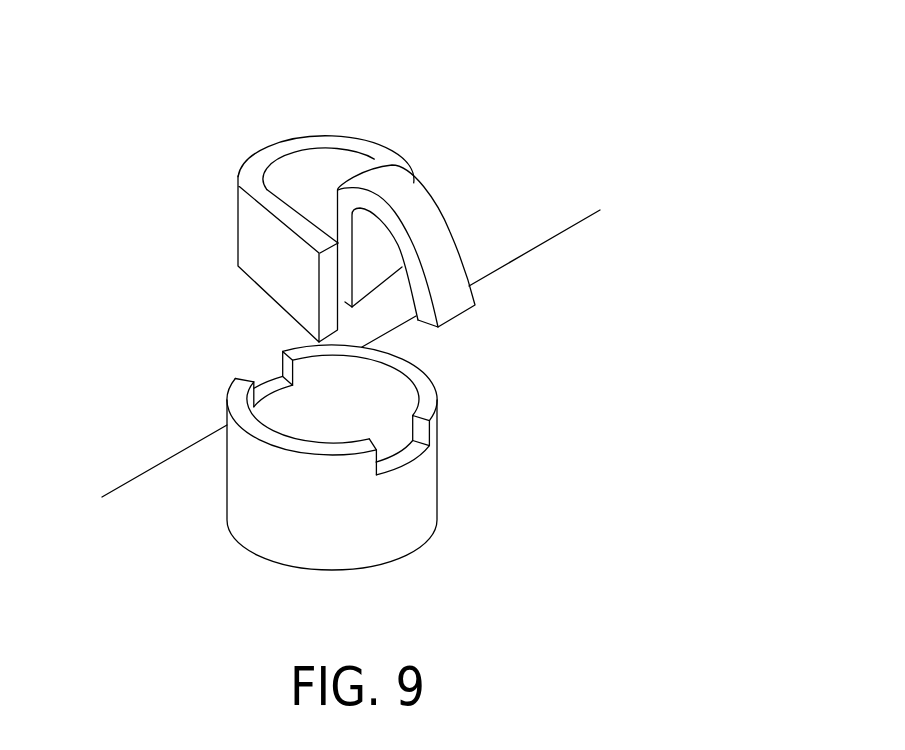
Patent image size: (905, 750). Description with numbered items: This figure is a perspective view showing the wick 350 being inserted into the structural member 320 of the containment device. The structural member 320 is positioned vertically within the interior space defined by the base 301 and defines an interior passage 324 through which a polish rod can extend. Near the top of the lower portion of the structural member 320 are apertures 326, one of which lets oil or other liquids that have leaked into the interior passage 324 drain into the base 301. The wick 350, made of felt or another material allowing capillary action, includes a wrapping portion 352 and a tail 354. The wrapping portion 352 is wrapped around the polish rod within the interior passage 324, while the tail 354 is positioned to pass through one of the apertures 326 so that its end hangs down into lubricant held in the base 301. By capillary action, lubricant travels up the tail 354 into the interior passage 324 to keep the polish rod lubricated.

The base 301 is at (163, 502).
The structural member 320 is at (337, 465).
The interior passage 324 is at (378, 393).
The apertures 326 is at (268, 388).
The wick 350 is at (331, 189).
The wrapping portion 352 is at (238, 213).
The tail 354 is at (437, 243).